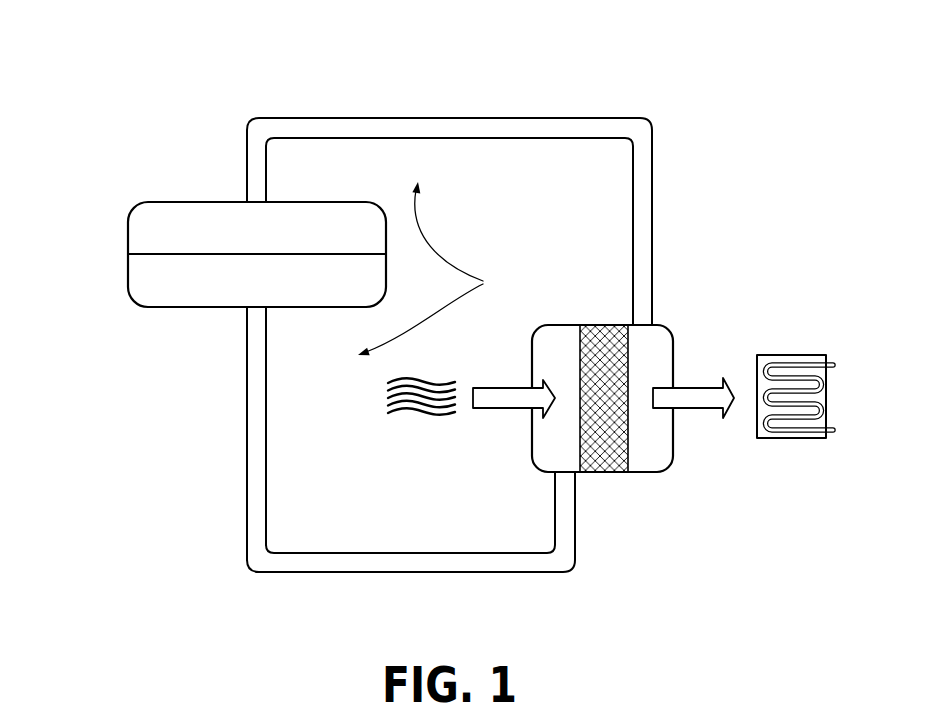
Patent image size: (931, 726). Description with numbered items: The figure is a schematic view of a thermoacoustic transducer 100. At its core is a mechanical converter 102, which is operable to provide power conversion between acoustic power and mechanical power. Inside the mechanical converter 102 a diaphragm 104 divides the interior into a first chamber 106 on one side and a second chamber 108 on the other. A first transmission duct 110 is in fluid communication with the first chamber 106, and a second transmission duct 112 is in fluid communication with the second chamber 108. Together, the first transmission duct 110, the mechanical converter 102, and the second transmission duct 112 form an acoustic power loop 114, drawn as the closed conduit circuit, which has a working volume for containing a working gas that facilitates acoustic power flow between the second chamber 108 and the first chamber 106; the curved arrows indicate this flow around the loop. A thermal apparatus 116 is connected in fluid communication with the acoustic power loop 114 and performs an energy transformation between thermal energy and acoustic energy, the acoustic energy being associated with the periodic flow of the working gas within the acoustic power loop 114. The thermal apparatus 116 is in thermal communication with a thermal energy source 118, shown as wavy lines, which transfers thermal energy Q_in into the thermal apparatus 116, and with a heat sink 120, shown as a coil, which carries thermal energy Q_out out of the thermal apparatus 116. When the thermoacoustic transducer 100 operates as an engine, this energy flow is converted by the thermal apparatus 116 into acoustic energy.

The thermoacoustic transducer 100 is at (110, 68).
The mechanical converter 102 is at (180, 185).
The diaphragm 104 is at (223, 255).
The first chamber 106 is at (160, 227).
The second chamber 108 is at (160, 276).
The first transmission duct 110 is at (412, 118).
The second transmission duct 112 is at (248, 430).
The acoustic power loop 114 is at (442, 268).
The thermal apparatus 116 is at (625, 492).
The thermal energy source 118 is at (418, 424).
The heat sink 120 is at (793, 438).